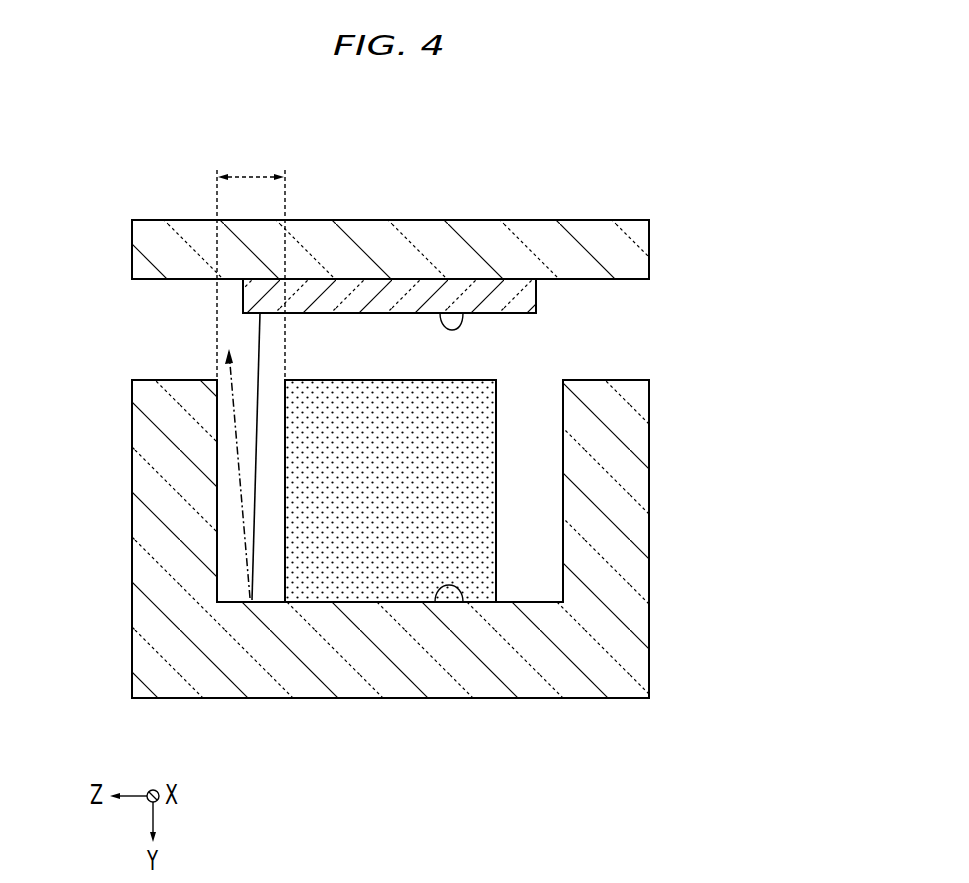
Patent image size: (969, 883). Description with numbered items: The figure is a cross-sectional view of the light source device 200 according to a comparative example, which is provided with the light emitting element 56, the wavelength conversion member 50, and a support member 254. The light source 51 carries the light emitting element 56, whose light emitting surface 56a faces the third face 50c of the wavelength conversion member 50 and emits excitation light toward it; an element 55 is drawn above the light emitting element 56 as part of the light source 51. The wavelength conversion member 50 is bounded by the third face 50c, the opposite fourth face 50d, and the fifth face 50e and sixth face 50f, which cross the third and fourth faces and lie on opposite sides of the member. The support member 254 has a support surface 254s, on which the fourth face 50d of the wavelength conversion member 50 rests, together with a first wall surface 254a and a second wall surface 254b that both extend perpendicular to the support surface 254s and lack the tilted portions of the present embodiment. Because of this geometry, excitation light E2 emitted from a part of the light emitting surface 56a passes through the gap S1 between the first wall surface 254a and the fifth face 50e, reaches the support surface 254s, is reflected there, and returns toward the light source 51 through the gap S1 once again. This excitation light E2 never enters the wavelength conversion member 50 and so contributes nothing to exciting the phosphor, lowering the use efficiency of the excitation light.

The light source device 200 is at (140, 190).
The light source 51 is at (621, 208).
The plate 55 is at (569, 232).
The light emitting element 56 is at (374, 290).
The light emitting surface 56a is at (461, 312).
The gap S1 is at (251, 257).
The excitation light E2 is at (258, 327).
The support member 254 is at (662, 659).
The first wall surface 254a is at (218, 474).
The second wall surface 254b is at (565, 393).
The support surface 254s is at (462, 603).
The wavelength conversion member 50 is at (480, 440).
The third face 50c is at (482, 380).
The fourth face 50d is at (353, 603).
The fifth face 50e is at (286, 500).
The sixth face 50f is at (496, 495).